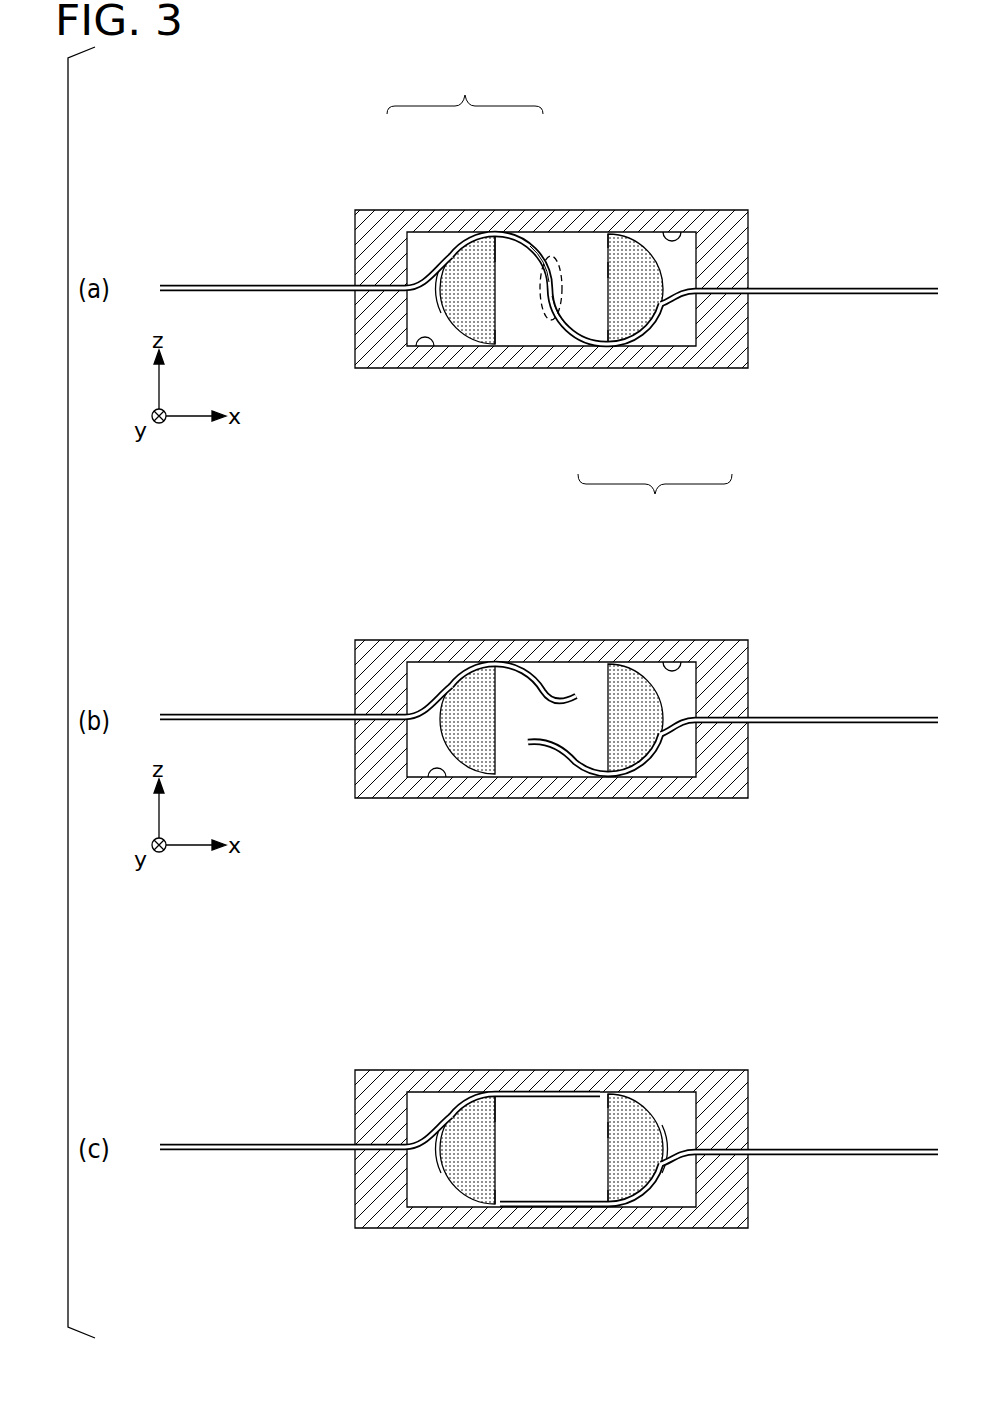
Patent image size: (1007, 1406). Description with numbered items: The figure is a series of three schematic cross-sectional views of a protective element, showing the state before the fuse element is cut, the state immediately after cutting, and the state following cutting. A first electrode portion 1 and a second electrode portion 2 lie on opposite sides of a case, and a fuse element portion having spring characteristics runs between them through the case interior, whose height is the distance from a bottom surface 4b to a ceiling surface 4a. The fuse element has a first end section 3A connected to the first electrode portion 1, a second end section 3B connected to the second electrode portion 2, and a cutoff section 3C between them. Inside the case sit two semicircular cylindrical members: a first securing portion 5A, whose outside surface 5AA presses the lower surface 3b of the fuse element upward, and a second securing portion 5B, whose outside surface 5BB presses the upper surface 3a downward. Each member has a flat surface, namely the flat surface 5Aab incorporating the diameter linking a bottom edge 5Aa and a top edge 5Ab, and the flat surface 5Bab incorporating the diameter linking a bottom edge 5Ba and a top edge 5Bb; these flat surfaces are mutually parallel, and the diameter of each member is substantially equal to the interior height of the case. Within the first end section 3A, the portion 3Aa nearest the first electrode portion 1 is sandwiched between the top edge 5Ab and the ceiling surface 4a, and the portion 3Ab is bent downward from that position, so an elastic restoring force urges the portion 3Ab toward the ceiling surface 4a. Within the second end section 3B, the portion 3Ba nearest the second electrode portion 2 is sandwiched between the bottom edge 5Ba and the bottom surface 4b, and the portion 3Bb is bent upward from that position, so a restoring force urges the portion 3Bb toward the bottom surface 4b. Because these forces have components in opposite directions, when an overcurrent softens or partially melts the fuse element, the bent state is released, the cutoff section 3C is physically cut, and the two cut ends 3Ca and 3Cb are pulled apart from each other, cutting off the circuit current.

The first electrode portion 1 is at (203, 284).
The second electrode portion 2 is at (852, 287).
The first end section 3A is at (465, 87).
The portion on the side of the first electrode portion 3Aa is at (450, 248).
The bent portion of the first end section 3Ab is at (540, 240).
The second end section 3B is at (655, 501).
The portion on the side of the second electrode portion 3Ba is at (647, 330).
The bent portion of the second end section 3Bb is at (565, 333).
The cutoff section 3C is at (541, 325).
The cut end 3Ca is at (587, 690).
The cut end 3Cb is at (515, 747).
The upper surface of the fuse element portion 3a is at (551, 268).
The lower surface of the fuse element portion 3b is at (553, 300).
The ceiling surface 4a is at (678, 226).
The bottom surface 4b is at (420, 352).
The first securing portion 5A is at (470, 322).
The outside surface of the first securing portion 5AA is at (440, 306).
The bottom edge of the first securing portion 5Aa is at (503, 348).
The top edge of the first securing portion 5Ab is at (503, 240).
The flat surface of the first securing portion 5Aab is at (504, 243).
The second securing portion 5B is at (628, 275).
The outside surface of the second securing portion 5BB is at (657, 1123).
The bottom edge of the second securing portion 5Ba is at (598, 348).
The top edge of the second securing portion 5Bb is at (607, 236).
The flat surface of the second securing portion 5Bab is at (605, 272).